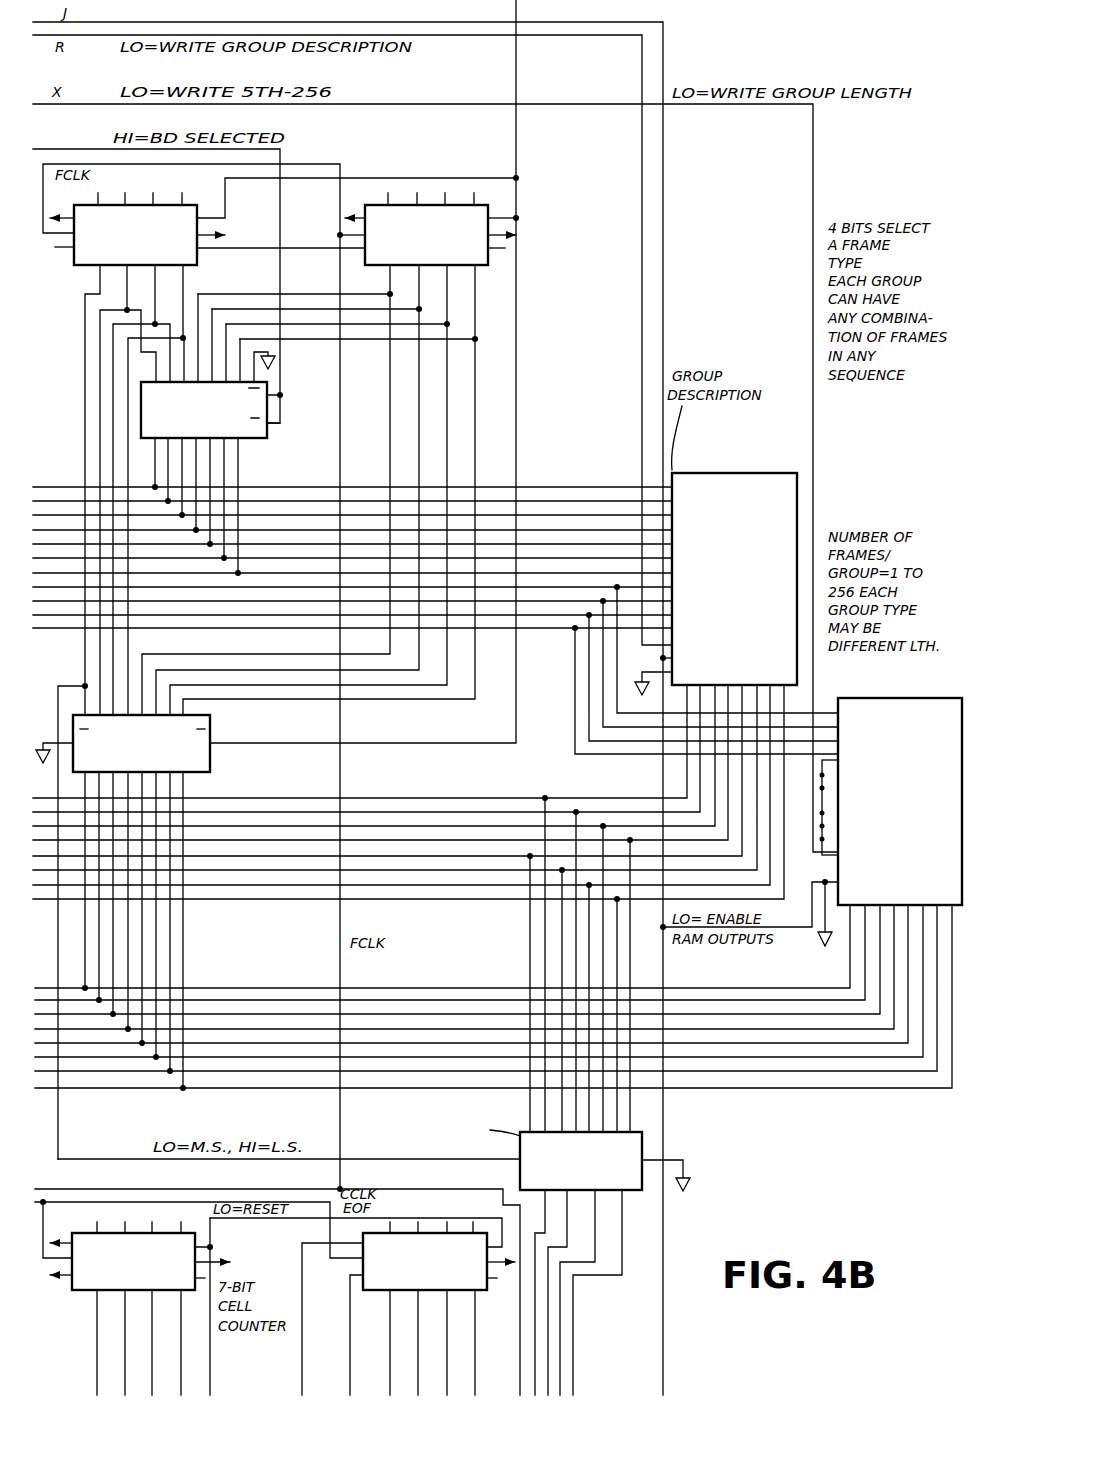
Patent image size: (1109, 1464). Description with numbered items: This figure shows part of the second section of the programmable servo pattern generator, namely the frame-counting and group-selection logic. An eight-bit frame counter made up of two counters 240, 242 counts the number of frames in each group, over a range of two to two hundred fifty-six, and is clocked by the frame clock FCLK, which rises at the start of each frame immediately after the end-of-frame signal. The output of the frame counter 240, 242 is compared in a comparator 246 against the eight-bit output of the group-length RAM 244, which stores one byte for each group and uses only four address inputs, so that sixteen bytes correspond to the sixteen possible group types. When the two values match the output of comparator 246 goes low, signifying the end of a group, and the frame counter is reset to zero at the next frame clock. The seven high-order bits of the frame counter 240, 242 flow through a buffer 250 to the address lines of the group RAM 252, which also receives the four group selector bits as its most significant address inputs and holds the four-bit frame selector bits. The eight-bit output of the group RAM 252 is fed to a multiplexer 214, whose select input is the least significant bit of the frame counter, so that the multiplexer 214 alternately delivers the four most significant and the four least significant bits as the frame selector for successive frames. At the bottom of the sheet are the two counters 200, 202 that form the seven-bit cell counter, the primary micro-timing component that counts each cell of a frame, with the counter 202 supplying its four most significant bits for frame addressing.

The counter 240 is at (78, 268).
The counter 242 is at (490, 263).
The buffer 250 is at (258, 442).
The group RAM 252 is at (741, 473).
The group-length RAM 244 is at (864, 680).
The comparator 246 is at (210, 758).
The multiplexer 214 is at (528, 1140).
The counter 200 is at (80, 1292).
The counter 202 is at (363, 1290).